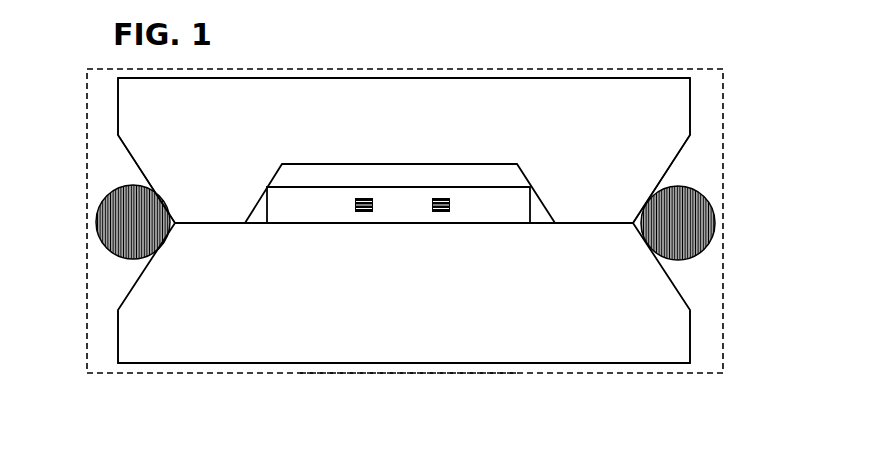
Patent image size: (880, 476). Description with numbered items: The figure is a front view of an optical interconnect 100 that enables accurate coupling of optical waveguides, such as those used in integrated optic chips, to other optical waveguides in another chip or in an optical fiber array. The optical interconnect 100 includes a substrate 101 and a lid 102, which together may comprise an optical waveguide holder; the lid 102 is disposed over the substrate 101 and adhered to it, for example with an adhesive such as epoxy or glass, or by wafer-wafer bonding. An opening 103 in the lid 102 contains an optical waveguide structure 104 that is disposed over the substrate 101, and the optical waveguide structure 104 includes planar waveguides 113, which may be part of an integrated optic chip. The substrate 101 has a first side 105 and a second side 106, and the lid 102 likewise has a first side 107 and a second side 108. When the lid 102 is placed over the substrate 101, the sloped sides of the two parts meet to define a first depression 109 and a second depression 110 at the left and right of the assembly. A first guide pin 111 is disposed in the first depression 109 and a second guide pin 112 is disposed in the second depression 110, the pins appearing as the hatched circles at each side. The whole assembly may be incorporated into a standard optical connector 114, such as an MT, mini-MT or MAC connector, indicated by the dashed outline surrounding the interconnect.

The optical interconnect 100 is at (777, 61).
The substrate 101 is at (680, 348).
The lid 102 is at (683, 113).
The opening 103 is at (462, 175).
The optical waveguide structure 104 is at (510, 178).
The first side 105 is at (690, 325).
The second side 106 is at (125, 351).
The first side 107 is at (690, 88).
The second side 108 is at (118, 105).
The first depression 109 is at (680, 157).
The second depression 110 is at (143, 163).
The first guide pin 111 is at (717, 223).
The second guide pin 112 is at (95, 222).
The planar waveguides 113 is at (441, 213).
The optical connector 114 is at (403, 373).